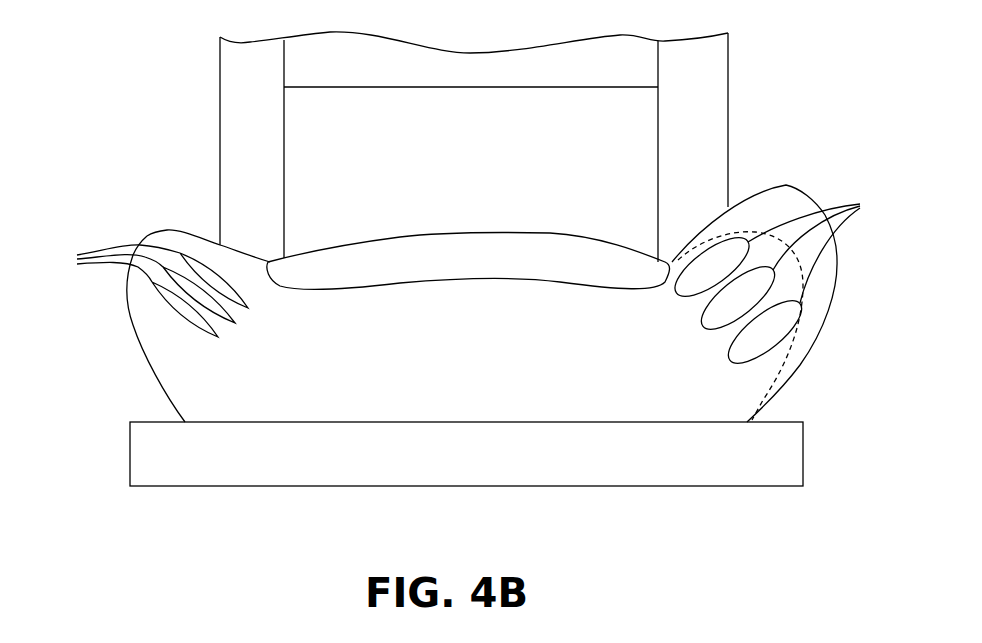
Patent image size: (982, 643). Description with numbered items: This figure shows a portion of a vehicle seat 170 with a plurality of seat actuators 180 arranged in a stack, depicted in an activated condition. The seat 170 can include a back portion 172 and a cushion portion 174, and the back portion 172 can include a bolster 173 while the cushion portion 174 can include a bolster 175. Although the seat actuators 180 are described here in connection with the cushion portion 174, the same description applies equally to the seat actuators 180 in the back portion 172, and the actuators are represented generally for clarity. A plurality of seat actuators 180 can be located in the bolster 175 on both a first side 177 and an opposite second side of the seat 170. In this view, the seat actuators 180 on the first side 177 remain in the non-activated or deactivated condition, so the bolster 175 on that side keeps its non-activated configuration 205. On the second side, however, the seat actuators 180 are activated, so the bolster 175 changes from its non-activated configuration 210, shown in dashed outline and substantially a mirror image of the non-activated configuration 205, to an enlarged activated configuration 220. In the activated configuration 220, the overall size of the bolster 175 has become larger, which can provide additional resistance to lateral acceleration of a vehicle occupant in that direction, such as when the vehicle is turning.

The seat 170 is at (127, 113).
The back portion 172 is at (218, 176).
The bolster 173 is at (250, 73).
The cushion portion 174 is at (147, 363).
The bolster 175 is at (815, 343).
The first side 177 is at (153, 173).
The seat actuator 180 is at (470, 284).
The non-activated configuration 205 is at (157, 230).
The non-activated configuration 210 is at (808, 290).
The activated configuration 220 is at (803, 185).